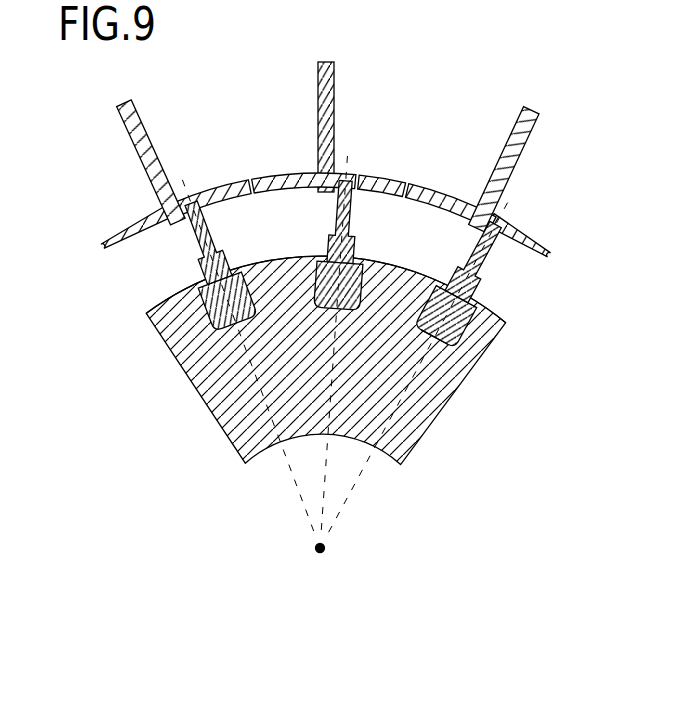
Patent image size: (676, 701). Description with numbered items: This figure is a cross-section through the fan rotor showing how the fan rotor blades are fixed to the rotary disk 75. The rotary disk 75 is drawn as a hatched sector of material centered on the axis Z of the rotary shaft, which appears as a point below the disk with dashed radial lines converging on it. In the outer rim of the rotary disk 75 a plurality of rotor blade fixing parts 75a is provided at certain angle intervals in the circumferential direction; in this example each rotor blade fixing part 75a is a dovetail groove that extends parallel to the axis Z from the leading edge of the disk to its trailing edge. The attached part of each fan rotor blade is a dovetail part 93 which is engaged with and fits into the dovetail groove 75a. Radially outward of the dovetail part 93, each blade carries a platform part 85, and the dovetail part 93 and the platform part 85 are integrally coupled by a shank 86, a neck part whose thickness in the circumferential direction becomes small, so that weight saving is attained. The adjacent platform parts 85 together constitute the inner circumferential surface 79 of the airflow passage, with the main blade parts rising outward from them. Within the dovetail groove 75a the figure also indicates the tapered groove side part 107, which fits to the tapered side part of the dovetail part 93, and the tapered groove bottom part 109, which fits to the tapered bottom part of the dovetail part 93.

The rotary disk 75 is at (303, 365).
The rotor blade fixing part 75a is at (385, 275).
The inner circumferential surface of the airflow passage 79 is at (377, 175).
The platform part 85 is at (289, 180).
The shank 86 is at (351, 211).
The dovetail part 93 is at (323, 271).
The tapered groove side part 107 is at (463, 337).
The tapered groove bottom part 109 is at (439, 342).
The axis of the rotary shaft Z is at (323, 550).